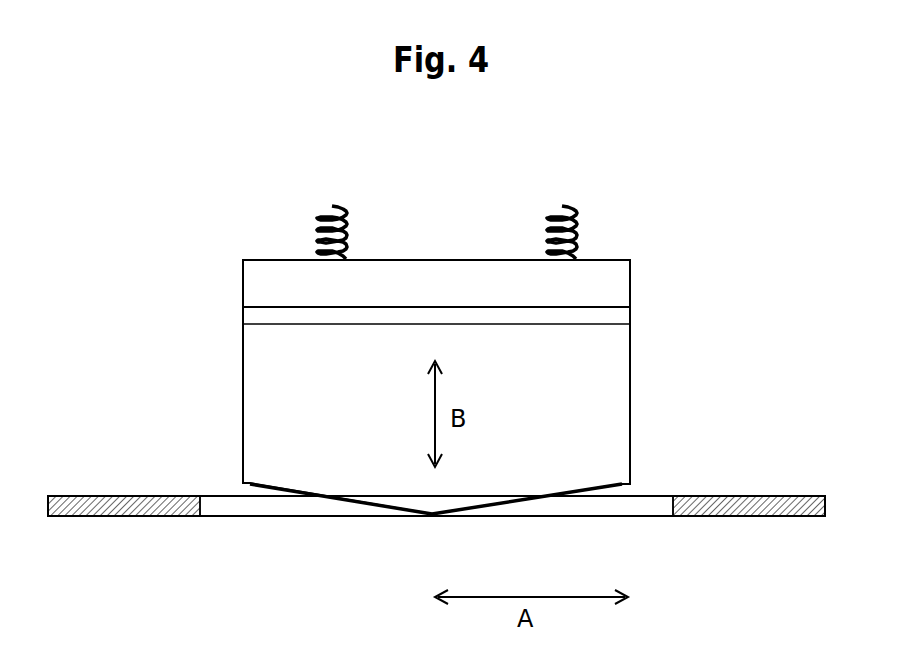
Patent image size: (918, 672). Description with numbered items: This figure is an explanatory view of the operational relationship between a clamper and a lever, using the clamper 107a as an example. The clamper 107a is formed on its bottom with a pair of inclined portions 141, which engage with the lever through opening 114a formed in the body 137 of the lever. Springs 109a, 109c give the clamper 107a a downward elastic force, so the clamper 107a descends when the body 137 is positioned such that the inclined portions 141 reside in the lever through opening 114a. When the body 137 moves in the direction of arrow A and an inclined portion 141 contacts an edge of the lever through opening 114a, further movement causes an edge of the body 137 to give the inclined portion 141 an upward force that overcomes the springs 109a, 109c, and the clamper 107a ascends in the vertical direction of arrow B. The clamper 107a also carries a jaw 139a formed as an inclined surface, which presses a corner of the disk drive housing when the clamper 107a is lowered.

The clamper 107a is at (412, 260).
The spring 109a is at (318, 223).
The spring 109c is at (575, 216).
The jaw 139a is at (250, 315).
The inclined portions 141 is at (347, 502).
The body 137 is at (773, 496).
The lever through opening 114a is at (250, 503).